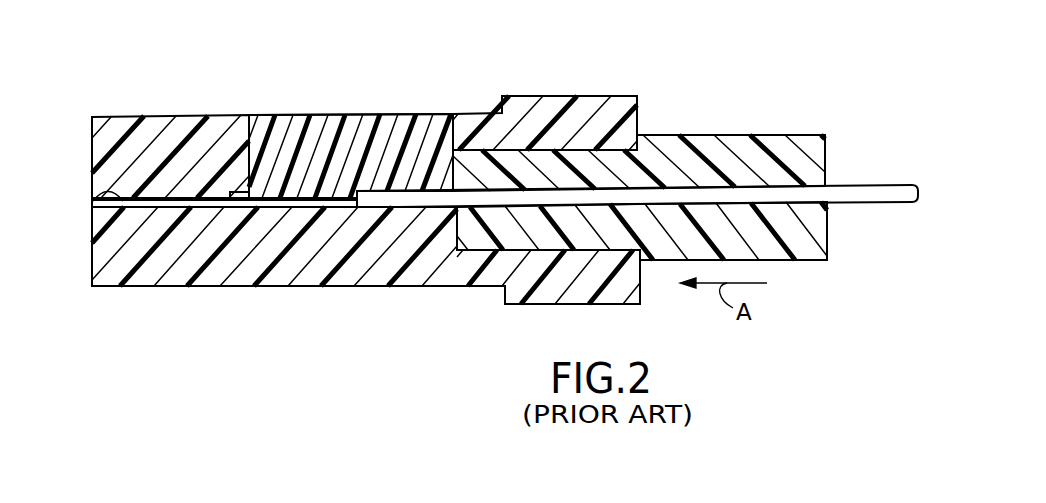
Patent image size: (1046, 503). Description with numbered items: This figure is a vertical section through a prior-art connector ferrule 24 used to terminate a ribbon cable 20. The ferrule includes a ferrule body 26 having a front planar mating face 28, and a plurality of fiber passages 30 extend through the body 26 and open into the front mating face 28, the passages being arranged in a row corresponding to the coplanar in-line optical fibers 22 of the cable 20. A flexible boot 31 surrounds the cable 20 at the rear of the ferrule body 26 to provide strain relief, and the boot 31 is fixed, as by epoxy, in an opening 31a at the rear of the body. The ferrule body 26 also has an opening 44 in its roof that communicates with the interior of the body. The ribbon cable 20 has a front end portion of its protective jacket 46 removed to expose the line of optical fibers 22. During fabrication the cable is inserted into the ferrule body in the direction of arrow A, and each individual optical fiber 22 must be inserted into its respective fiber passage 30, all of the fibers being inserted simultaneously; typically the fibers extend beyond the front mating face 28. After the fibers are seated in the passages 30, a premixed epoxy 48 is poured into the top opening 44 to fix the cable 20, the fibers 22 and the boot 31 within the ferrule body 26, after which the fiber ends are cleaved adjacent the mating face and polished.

The ribbon cable 20 is at (854, 181).
The optical fibers 22 is at (200, 197).
The connector ferrule 24 is at (640, 72).
The ferrule body 26 is at (222, 268).
The front planar mating face 28 is at (92, 153).
The fiber passages 30 is at (96, 199).
The flexible boot 31 is at (727, 162).
The opening 31a is at (506, 250).
The opening 44 is at (254, 153).
The protective jacket 46 is at (400, 200).
The premixed epoxy 48 is at (412, 116).